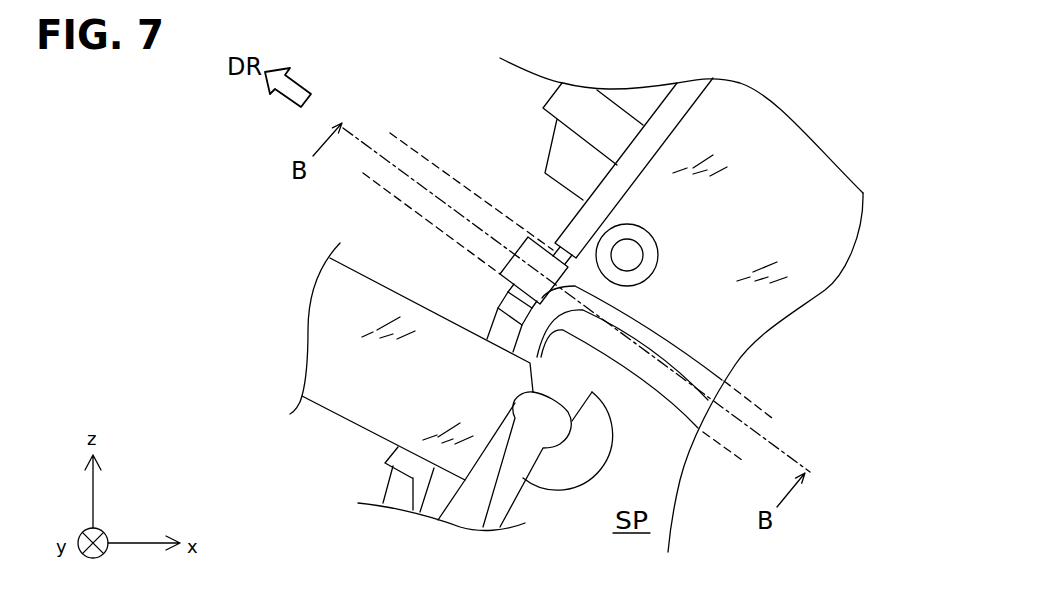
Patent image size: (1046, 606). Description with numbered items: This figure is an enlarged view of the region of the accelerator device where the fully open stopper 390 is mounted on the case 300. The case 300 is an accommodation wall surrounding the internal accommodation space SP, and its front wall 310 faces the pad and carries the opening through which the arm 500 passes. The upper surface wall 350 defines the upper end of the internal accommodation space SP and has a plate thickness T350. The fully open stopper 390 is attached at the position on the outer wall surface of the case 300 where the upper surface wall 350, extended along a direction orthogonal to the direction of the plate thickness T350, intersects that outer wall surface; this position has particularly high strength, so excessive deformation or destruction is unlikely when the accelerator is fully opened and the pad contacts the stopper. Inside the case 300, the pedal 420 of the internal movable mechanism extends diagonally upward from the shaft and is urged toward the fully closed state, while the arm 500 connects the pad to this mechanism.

The case 300 is at (806, 95).
The front wall 310 is at (509, 299).
The upper surface wall 350 is at (670, 382).
The fully open stopper 390 is at (520, 236).
The pedal 420 is at (517, 460).
The arm 500 is at (368, 412).
The plate thickness of the upper surface wall T350 is at (695, 475).